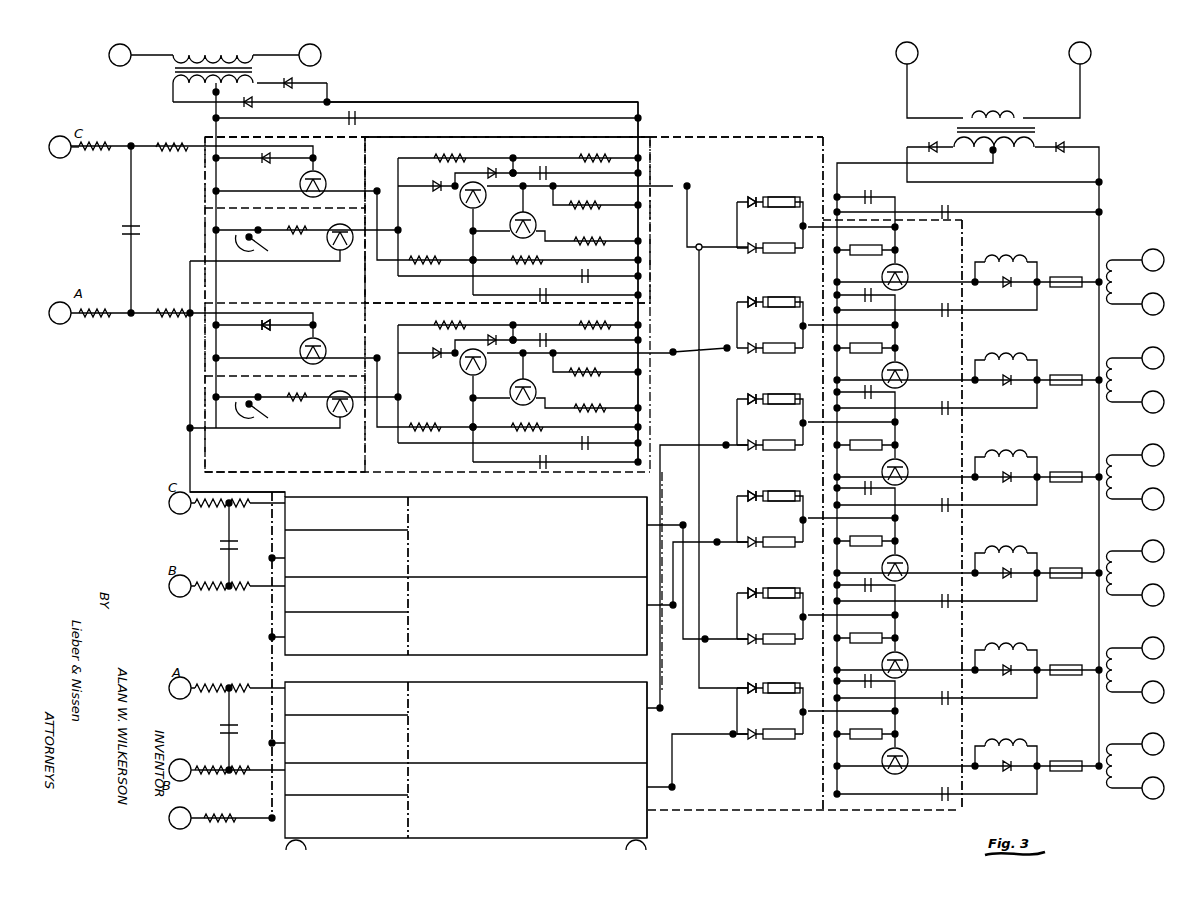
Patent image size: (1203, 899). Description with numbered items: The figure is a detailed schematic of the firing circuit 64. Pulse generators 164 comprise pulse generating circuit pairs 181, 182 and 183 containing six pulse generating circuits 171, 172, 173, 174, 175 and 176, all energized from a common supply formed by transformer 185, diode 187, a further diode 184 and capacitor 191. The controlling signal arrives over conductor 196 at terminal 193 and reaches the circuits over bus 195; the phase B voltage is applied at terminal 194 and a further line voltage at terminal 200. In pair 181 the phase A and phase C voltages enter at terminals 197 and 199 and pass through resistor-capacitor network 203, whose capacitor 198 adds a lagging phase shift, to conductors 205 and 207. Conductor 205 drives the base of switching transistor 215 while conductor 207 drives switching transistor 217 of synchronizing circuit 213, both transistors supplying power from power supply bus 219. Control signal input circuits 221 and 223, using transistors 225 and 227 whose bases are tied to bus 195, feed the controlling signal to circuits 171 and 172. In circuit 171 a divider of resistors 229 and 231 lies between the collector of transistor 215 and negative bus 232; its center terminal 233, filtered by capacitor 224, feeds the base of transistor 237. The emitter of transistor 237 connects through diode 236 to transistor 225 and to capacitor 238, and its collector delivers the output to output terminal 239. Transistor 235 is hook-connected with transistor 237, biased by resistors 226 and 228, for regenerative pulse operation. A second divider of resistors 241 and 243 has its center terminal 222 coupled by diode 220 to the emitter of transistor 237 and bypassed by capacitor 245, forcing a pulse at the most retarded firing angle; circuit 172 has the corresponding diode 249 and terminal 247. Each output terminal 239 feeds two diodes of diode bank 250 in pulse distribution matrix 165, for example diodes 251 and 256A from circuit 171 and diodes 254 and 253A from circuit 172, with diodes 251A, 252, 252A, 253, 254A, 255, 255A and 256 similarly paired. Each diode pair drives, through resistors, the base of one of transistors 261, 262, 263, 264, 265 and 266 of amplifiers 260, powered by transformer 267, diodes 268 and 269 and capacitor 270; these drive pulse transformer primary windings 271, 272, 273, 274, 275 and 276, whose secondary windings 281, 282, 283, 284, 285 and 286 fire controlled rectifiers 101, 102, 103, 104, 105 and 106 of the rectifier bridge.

The firing circuit 64 is at (740, 93).
The controlled rectifier 101 is at (1163, 282).
The controlled rectifier 102 is at (1163, 380).
The controlled rectifier 103 is at (1163, 477).
The controlled rectifier 104 is at (1163, 573).
The controlled rectifier 105 is at (1163, 670).
The controlled rectifier 106 is at (1163, 766).
The pulse generators 164 is at (527, 76).
The pulse distribution matrix 165 is at (878, 95).
The pulse generating circuit 171 is at (515, 137).
The pulse generating circuit 172 is at (408, 497).
The pulse generating circuit 173 is at (550, 497).
The pulse generating circuit 174 is at (578, 682).
The pulse generating circuit 175 is at (432, 682).
The pulse generating circuit 176 is at (497, 838).
The pulse generating circuit pair 181 is at (468, 101).
The pulse generating circuit pair 182 is at (512, 493).
The pulse generating circuit pair 183 is at (525, 678).
The diode 184 is at (250, 100).
The transformer 185 is at (176, 72).
The diode 187 is at (292, 80).
The capacitor 191 is at (357, 113).
The terminal 193 is at (178, 829).
The terminal 194 is at (168, 586).
The bus 195 is at (262, 262).
The conductor 196 is at (168, 500).
The terminal 197 is at (58, 302).
The capacitor 198 is at (126, 228).
The terminal 199 is at (62, 136).
The terminal 200 is at (168, 688).
The resistor-capacitor network 203 is at (172, 218).
The conductor 205 is at (188, 150).
The conductor 207 is at (190, 303).
The synchronizing circuit 213 is at (205, 341).
The switching transistor 215 is at (322, 176).
The switching transistor 217 is at (322, 347).
The power supply bus 219 is at (292, 490).
The diode 220 is at (495, 168).
The control signal input circuit 221 is at (205, 243).
The center terminal 222 is at (522, 158).
The control signal input circuit 223 is at (205, 402).
The filter capacitor 224 is at (538, 460).
The transistor 225 is at (328, 240).
The biasing resistor 226 is at (592, 408).
The transistor 227 is at (328, 407).
The biasing resistor 228 is at (583, 377).
The resistor 229 is at (432, 414).
The resistor 231 is at (520, 422).
The negative bus 232 is at (642, 116).
The center terminal 233 is at (472, 424).
The transistor 235 is at (511, 389).
The diode 236 is at (435, 350).
The transistor 237 is at (462, 372).
The capacitor 238 is at (590, 443).
The output terminal 239 is at (689, 185).
The resistor 241 is at (436, 325).
The resistor 243 is at (598, 235).
The capacitor 245 is at (546, 336).
The junction 247 is at (524, 325).
The diode 249 is at (495, 335).
The diode bank 250 is at (766, 137).
The diode 251 is at (750, 245).
The diode 251A is at (752, 198).
The diode-resistor gate 252 is at (750, 345).
The diode-resistor gate 252A is at (752, 298).
The diode-resistor gate 253 is at (750, 442).
The diode 253A is at (752, 395).
The diode 254 is at (750, 539).
The diode-resistor gate 254A is at (752, 492).
The diode-resistor gate 255 is at (750, 636).
The diode-resistor gate 255A is at (752, 589).
The diode-resistor gate 256 is at (750, 731).
The diode 256A is at (752, 684).
The amplifiers 260 is at (963, 244).
The transistor 261 is at (908, 274).
The transistor 262 is at (908, 372).
The transistor 263 is at (908, 469).
The transistor 264 is at (908, 565).
The transistor 265 is at (908, 662).
The transistor 266 is at (908, 758).
The transformer 267 is at (1010, 116).
The diode 268 is at (1062, 143).
The diode 269 is at (927, 141).
The capacitor 270 is at (950, 208).
The pulse transformer primary winding 271 is at (1015, 258).
The pulse transformer primary winding 272 is at (1015, 356).
The pulse transformer primary winding 273 is at (1015, 453).
The pulse transformer primary winding 274 is at (1015, 549).
The pulse transformer primary winding 275 is at (1015, 646).
The pulse transformer primary winding 276 is at (1015, 742).
The pulse transformer secondary winding 281 is at (1118, 260).
The pulse transformer secondary winding 282 is at (1118, 358).
The pulse transformer secondary winding 283 is at (1118, 455).
The pulse transformer secondary winding 284 is at (1118, 551).
The pulse transformer secondary winding 285 is at (1118, 648).
The pulse transformer secondary winding 286 is at (1118, 744).